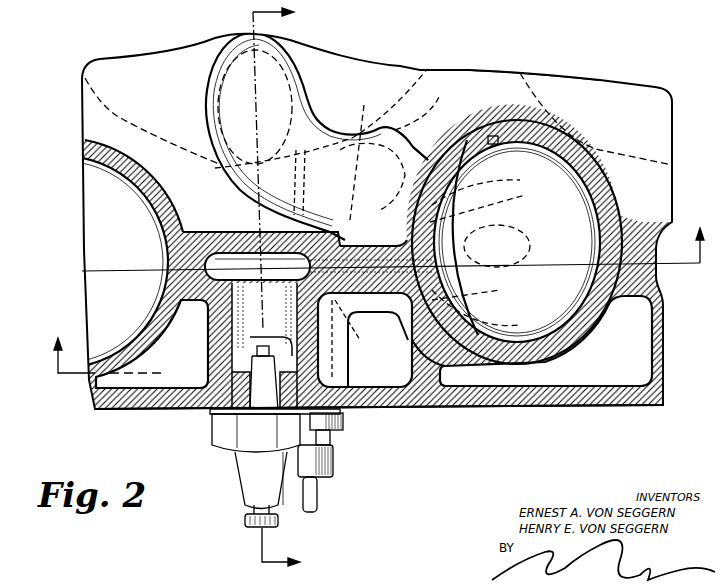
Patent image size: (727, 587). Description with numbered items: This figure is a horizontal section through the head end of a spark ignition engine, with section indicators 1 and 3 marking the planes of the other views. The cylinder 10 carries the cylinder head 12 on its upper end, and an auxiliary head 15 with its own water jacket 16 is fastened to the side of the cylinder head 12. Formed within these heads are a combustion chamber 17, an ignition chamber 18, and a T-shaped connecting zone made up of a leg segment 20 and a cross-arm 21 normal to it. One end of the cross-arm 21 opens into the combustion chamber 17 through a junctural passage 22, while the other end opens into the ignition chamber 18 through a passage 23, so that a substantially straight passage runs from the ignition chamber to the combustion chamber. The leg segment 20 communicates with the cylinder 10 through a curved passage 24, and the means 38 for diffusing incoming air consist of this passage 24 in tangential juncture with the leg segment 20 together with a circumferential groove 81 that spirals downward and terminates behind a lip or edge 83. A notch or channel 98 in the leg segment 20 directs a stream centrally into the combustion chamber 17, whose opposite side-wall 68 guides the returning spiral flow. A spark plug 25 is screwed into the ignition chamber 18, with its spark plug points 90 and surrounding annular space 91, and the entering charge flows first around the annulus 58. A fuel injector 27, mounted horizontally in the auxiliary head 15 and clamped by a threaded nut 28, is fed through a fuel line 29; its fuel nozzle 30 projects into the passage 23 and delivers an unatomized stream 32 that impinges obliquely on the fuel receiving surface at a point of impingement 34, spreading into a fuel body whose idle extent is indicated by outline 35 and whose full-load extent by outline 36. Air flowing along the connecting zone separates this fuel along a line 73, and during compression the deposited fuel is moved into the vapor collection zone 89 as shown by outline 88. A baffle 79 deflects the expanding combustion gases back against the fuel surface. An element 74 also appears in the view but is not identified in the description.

The section line 1- 1 is at (379, 297).
The section line 3- 3 is at (283, 290).
The cylinder 10 is at (117, 116).
The cylinder head 12 is at (485, 80).
The auxiliary head 15 is at (142, 412).
The water jacket 16 is at (546, 341).
The combustion chamber 17 is at (311, 244).
The ignition chamber 18 is at (212, 350).
The leg segment 20 is at (413, 157).
The cross-arm 21 is at (408, 350).
The junctural passage 22 is at (436, 348).
The passage 23 is at (263, 228).
The curved passage 24 is at (313, 107).
The spark plug 25 is at (243, 468).
The fuel injector 27 is at (333, 440).
The threaded nut 28 is at (355, 412).
The fuel line 29 is at (318, 490).
The fuel nozzle 30 is at (365, 340).
The unatomized stream 32 is at (347, 316).
The point of impingement 34 is at (380, 323).
The outline 35 is at (400, 340).
The outline 36 is at (531, 238).
The means 38 is at (423, 140).
The annulus 58 is at (208, 230).
The opposite side-wall 68 is at (495, 140).
The line 73 is at (373, 226).
The groove 74 is at (476, 266).
The baffle 79 is at (462, 198).
The circumferential groove 81 is at (321, 118).
The lip or edge 83 is at (366, 157).
The outline 88 is at (305, 182).
The vapor collection zone 89 is at (354, 179).
The spark plug points 90 is at (252, 337).
The annular space 91 is at (204, 412).
The notch or channel 98 is at (464, 180).